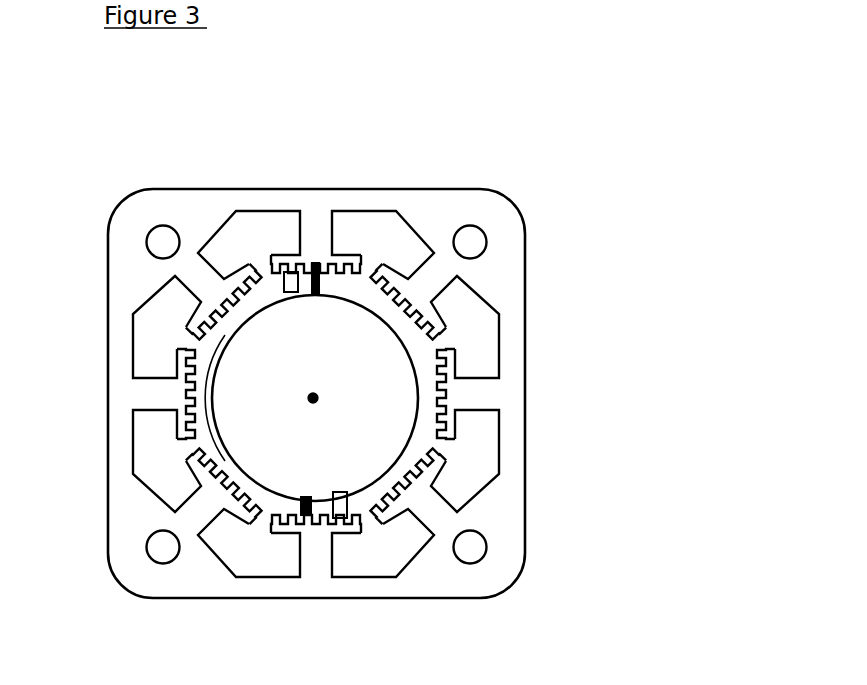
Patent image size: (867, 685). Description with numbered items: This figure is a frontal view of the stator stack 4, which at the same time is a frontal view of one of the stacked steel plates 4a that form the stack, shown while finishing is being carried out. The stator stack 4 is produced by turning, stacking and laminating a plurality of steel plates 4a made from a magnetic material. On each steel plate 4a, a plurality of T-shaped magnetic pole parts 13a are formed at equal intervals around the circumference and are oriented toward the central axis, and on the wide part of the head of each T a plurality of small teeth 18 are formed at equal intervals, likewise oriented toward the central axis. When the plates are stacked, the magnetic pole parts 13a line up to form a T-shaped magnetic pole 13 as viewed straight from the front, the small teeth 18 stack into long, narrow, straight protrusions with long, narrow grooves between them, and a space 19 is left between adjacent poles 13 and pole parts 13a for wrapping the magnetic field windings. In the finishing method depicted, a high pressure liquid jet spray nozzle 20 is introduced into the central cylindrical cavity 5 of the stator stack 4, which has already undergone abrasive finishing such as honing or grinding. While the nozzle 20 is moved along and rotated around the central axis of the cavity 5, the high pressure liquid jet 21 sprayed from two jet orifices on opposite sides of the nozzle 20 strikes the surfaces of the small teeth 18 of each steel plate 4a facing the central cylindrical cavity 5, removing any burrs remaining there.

The stator stack 4 is at (316, 350).
The steel plate 4a is at (312, 348).
The central cylindrical cavity 5 is at (502, 394).
The T-shaped magnetic pole 13 is at (301, 205).
The T-shaped magnetic pole part 13a is at (338, 586).
The small teeth 18 is at (322, 395).
The space 19 is at (273, 250).
The high pressure liquid jet spray nozzle 20 is at (418, 431).
The high pressure liquid jet 21 is at (316, 389).